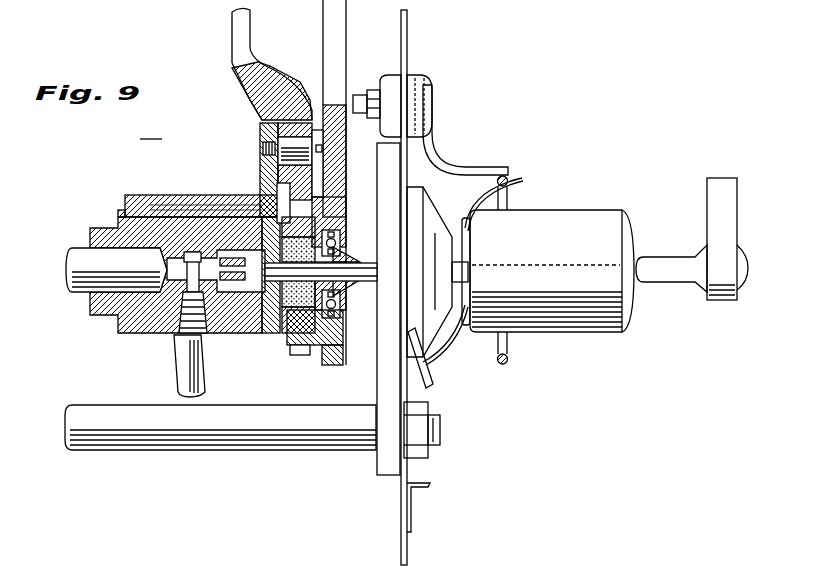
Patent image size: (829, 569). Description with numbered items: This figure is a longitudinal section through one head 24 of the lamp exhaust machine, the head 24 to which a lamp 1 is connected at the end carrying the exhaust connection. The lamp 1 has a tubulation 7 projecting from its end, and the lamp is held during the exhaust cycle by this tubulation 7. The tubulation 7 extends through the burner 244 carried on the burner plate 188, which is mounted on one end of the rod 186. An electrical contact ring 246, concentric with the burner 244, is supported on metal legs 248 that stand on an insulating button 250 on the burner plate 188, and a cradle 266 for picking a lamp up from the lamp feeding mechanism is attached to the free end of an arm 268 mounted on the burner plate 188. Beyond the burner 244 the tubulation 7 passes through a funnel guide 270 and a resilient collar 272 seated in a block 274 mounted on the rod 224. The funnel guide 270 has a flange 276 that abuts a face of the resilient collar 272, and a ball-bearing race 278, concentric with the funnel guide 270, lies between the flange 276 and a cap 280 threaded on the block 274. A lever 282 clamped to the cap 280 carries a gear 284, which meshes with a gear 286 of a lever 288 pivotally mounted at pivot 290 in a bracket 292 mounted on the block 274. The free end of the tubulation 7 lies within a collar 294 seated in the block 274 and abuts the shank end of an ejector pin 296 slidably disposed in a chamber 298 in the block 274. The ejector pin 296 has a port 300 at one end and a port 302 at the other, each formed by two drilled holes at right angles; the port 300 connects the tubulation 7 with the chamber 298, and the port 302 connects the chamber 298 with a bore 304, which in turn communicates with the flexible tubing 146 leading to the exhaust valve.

The lamp 1 is at (557, 224).
The tubulation 7 is at (368, 264).
The head 24 is at (151, 128).
The flexible tubing 146 is at (180, 372).
The rod 186 is at (321, 441).
The burner plate 188 is at (410, 42).
The rod 224 is at (80, 262).
The burner 244 is at (434, 218).
The electrical contact ring 246 is at (508, 344).
The metal legs 248 is at (444, 161).
The insulating button 250 is at (409, 78).
The cradle 266 is at (712, 207).
The arm 268 is at (668, 279).
The funnel guide 270 is at (349, 252).
The resilient collar 272 is at (292, 296).
The block 274 is at (120, 326).
The flange 276 is at (338, 306).
The ball-bearing race 278 is at (340, 221).
The cap 280 is at (330, 366).
The lever 282 is at (338, 33).
The gear 284 is at (300, 357).
The gear 286 is at (285, 172).
The lever 288 is at (246, 32).
The pivot 290 is at (295, 138).
The bracket 292 is at (133, 197).
The collar 294 is at (262, 285).
The ejector pin 296 is at (232, 205).
The chamber 298 is at (191, 203).
The port 300 is at (250, 212).
The port 302 is at (228, 282).
The bore 304 is at (196, 278).